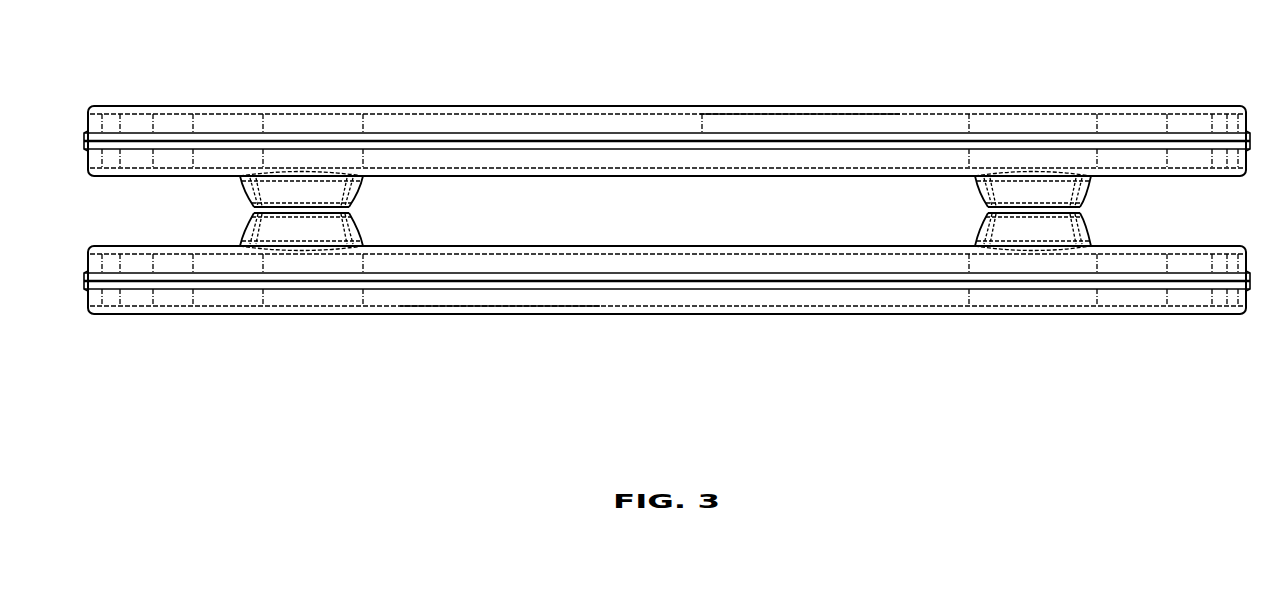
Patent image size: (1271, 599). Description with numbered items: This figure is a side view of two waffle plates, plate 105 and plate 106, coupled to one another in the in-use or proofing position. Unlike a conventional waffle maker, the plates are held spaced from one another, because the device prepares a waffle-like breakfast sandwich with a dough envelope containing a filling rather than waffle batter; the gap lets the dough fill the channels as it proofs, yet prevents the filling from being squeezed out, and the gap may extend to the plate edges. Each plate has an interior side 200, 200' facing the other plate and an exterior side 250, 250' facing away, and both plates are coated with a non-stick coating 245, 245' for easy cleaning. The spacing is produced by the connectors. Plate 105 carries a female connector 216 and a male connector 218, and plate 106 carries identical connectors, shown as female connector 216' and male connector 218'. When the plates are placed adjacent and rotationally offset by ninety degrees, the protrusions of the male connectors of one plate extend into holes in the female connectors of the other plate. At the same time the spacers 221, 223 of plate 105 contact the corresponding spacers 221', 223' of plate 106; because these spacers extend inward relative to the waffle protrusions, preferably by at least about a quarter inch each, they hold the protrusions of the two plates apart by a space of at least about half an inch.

The plate 105 is at (147, 122).
The plate 106 is at (158, 295).
The interior side 200 is at (500, 207).
The interior side 200' is at (650, 216).
The female connector 216 is at (253, 192).
The female connector 216' is at (1148, 229).
The male connector 218 is at (1145, 192).
The male connector 218' is at (253, 229).
The spacer 221 is at (393, 191).
The spacer 221' is at (991, 229).
The spacer 223 is at (991, 193).
The spacer 223' is at (396, 229).
The non-stick coating 245 is at (800, 86).
The non-stick coating 245' is at (500, 327).
The exterior side 250 is at (500, 67).
The exterior side 250' is at (745, 349).